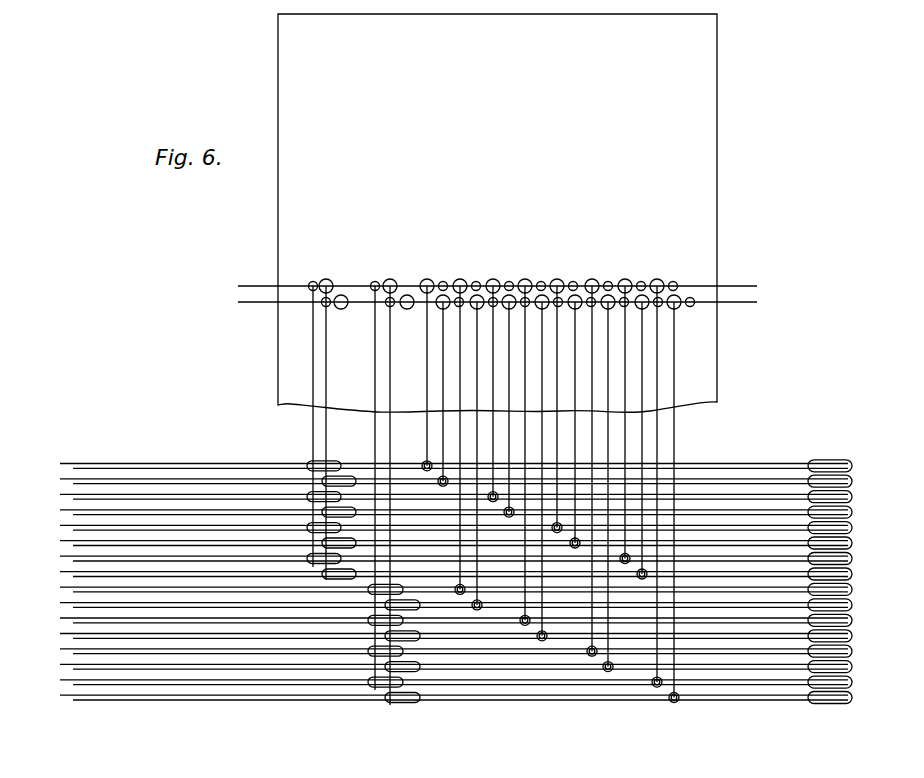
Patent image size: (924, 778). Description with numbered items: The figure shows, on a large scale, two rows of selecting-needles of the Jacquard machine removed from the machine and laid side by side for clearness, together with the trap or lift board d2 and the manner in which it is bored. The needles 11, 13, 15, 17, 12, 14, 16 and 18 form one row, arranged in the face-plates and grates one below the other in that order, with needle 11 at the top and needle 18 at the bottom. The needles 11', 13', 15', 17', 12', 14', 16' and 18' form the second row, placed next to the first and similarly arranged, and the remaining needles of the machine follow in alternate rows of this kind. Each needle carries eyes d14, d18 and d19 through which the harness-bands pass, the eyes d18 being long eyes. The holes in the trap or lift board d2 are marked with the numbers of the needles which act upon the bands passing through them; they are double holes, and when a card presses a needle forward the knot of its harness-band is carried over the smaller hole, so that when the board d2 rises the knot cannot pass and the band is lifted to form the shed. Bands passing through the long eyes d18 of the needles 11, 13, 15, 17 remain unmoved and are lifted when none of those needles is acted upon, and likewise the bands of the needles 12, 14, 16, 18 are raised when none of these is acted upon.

The trap or lift board d2 is at (497, 213).
The needle eye d14 is at (828, 452).
The long eye of needle d18 is at (336, 461).
The needle eye d19 is at (672, 702).
The selecting-needle 11 is at (482, 500).
The selecting-needle 11' is at (484, 479).
The selecting-needle 12 is at (482, 438).
The selecting-needle 12' is at (484, 417).
The selecting-needle 13 is at (482, 484).
The selecting-needle 13' is at (484, 464).
The selecting-needle 14 is at (482, 423).
The selecting-needle 14' is at (484, 402).
The selecting-needle 15 is at (482, 469).
The selecting-needle 15' is at (484, 448).
The selecting-needle 16 is at (482, 407).
The selecting-needle 16' is at (484, 386).
The selecting-needle 17 is at (482, 454).
The selecting-needle 17' is at (484, 486).
The selecting-needle 18 is at (482, 392).
The selecting-needle 18' is at (484, 424).